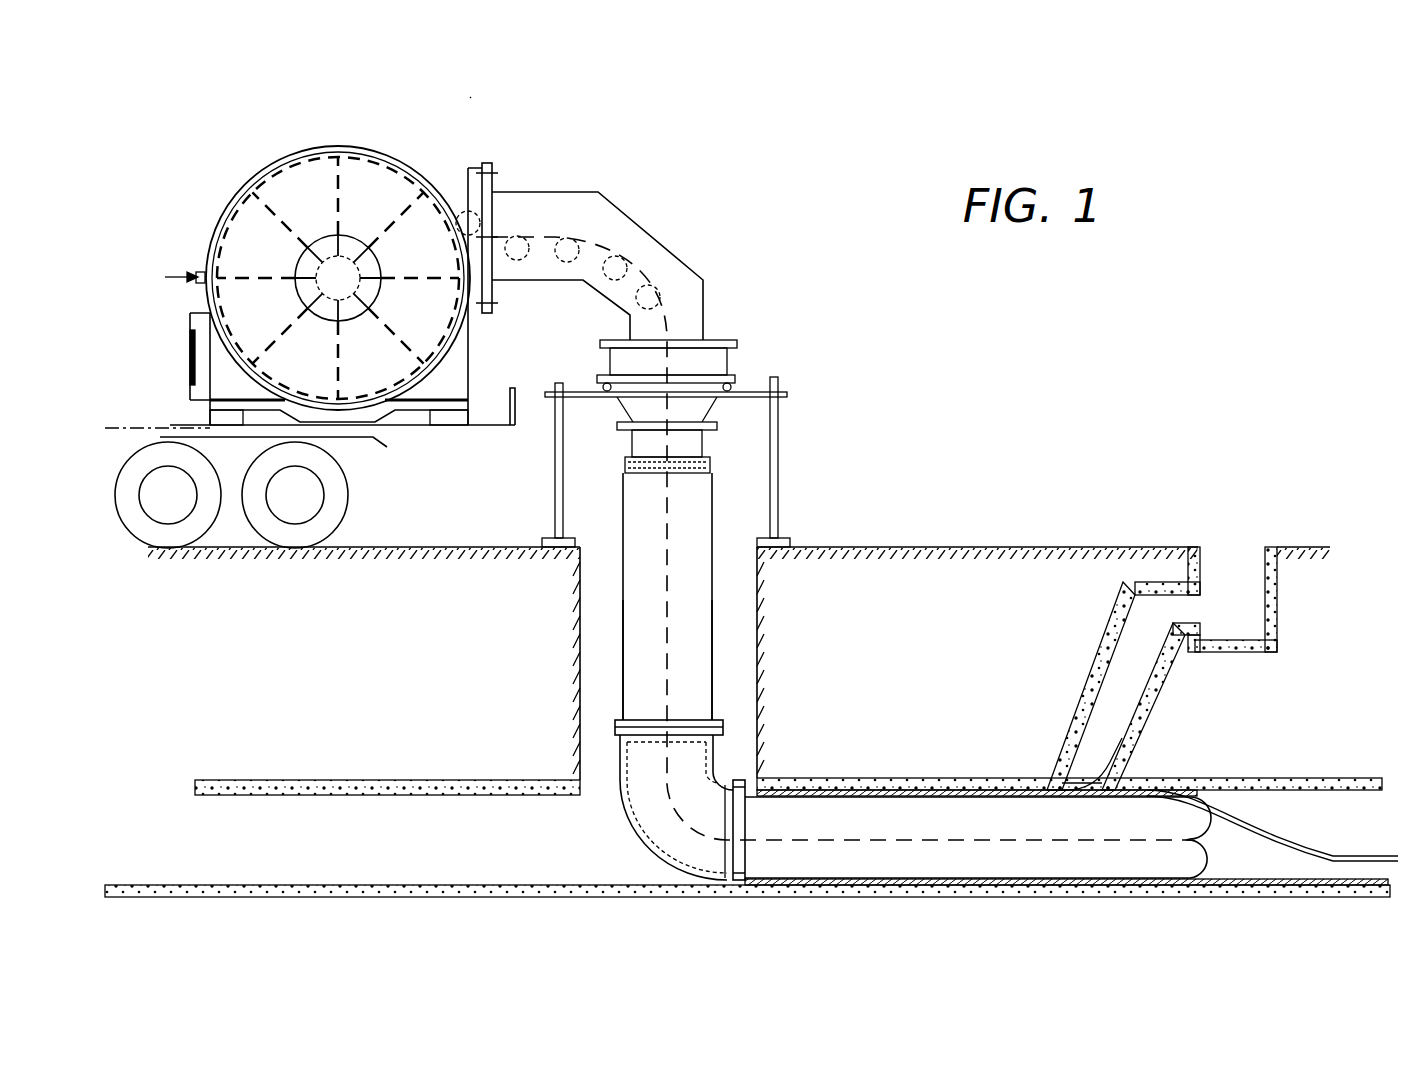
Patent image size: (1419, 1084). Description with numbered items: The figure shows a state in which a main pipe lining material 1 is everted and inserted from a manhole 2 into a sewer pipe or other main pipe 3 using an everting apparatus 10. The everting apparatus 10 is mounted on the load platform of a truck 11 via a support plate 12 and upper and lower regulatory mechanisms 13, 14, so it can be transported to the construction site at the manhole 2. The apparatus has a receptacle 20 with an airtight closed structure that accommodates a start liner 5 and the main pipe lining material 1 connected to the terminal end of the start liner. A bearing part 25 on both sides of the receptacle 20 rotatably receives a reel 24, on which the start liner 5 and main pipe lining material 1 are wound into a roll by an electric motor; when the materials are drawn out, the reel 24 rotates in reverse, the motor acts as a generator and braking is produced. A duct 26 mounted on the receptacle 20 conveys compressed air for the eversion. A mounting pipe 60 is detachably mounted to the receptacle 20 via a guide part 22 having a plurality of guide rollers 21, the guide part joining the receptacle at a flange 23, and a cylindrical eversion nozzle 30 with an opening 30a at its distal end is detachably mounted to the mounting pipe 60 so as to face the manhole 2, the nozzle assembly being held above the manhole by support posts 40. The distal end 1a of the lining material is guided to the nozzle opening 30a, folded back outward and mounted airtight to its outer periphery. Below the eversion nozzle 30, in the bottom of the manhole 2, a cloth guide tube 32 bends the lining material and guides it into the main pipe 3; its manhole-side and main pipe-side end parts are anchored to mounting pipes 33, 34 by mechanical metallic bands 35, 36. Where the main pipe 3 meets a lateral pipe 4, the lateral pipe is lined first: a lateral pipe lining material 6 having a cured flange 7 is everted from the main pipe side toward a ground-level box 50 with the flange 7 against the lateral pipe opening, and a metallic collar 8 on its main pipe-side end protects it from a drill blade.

The main pipe lining material 1 is at (593, 242).
The distal end 1a is at (622, 462).
The manhole 2 is at (600, 655).
The main pipe 3 is at (438, 785).
The lateral pipe 4 is at (1095, 655).
The start liner 5 is at (938, 780).
The lateral pipe lining material 6 is at (1150, 705).
The flange 7 is at (1140, 785).
The metallic collar 8 is at (1110, 750).
The everting apparatus 10 is at (473, 92).
The truck 11 is at (410, 432).
The support plate 12 is at (460, 385).
The upper regulatory mechanism 13 is at (450, 420).
The lower regulatory mechanism 14 is at (228, 422).
The receptacle 20 is at (316, 147).
The guide rollers 21 is at (560, 262).
The guide part 22 is at (660, 245).
The flange 23 is at (455, 165).
The reel 24 is at (330, 252).
The bearing part 25 is at (300, 262).
The duct 26 is at (195, 275).
The eversion nozzle 30 is at (708, 410).
The opening 30a is at (704, 440).
The guide tube 32 is at (620, 820).
The mounting pipe 33 is at (620, 718).
The mounting pipe 34 is at (775, 890).
The metallic band 35 is at (728, 720).
The metallic band 36 is at (740, 780).
The support posts 40 is at (555, 498).
The ground-level box 50 is at (1232, 548).
The mounting pipe 60 is at (730, 357).